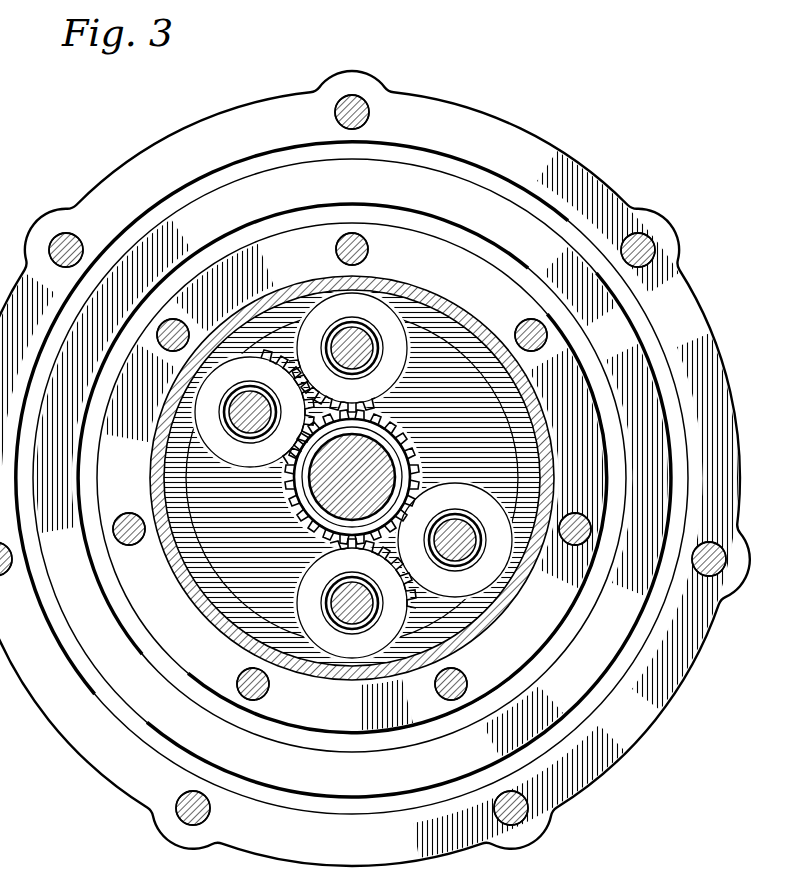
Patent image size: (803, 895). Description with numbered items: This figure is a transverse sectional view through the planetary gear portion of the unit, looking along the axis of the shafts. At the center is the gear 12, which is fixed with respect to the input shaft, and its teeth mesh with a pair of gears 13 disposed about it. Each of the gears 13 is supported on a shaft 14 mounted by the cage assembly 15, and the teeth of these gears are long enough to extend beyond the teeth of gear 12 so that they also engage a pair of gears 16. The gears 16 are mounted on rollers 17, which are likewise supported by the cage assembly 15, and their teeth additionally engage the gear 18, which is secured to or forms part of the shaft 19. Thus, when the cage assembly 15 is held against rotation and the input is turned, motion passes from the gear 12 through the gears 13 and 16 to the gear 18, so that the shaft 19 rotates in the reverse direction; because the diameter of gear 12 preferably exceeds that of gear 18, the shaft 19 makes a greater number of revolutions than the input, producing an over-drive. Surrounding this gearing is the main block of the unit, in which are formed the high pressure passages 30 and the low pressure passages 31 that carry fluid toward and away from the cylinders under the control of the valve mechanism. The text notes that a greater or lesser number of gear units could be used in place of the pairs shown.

The gear 12 is at (395, 423).
The gears 13 is at (380, 310).
The shafts 14 is at (354, 622).
The cage assembly 15 is at (445, 350).
The gears 16 is at (192, 401).
The rollers 17 is at (486, 568).
The gear 18 is at (330, 530).
The shaft 19 is at (382, 459).
The high pressure passages 30 is at (533, 670).
The low pressure passages 31 is at (598, 697).